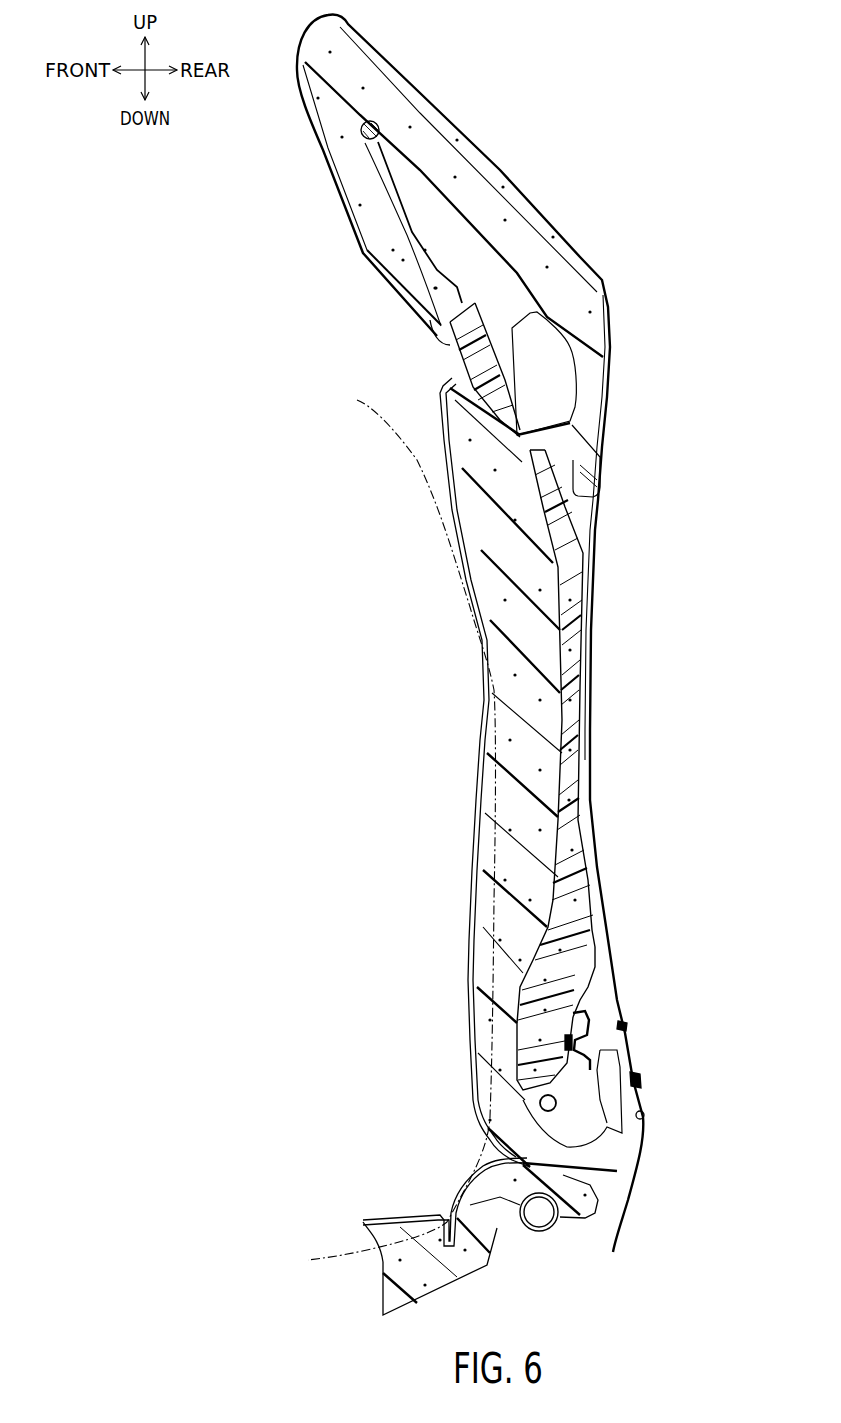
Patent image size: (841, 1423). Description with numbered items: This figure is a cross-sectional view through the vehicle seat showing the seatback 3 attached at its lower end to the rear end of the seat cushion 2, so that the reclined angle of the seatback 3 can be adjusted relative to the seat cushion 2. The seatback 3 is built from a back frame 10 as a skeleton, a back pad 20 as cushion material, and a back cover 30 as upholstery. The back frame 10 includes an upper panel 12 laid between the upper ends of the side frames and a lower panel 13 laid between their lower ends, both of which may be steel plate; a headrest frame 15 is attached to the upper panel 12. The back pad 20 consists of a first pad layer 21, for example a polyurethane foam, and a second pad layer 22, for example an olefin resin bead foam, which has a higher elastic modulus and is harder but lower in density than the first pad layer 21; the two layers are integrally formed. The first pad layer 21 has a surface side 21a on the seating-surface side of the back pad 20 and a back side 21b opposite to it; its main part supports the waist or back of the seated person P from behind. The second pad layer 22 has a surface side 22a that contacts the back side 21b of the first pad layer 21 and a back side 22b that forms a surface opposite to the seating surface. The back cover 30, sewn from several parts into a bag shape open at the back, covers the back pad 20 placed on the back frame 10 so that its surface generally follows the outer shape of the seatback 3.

The seat cushion 2 is at (395, 1213).
The seatback 3 is at (305, 579).
The back frame 10 is at (517, 604).
The upper panel 12 is at (512, 328).
The lower panel 13 is at (587, 1043).
The headrest frame 15 is at (365, 146).
The back pad 20 is at (515, 735).
The first pad layer 21 is at (500, 905).
The surface side 21a is at (486, 830).
The back side 21b is at (560, 782).
The second pad layer 22 is at (562, 733).
The surface side 22a is at (557, 702).
The back side 22b is at (582, 646).
The back cover 30 is at (470, 968).
The seated person P is at (405, 432).